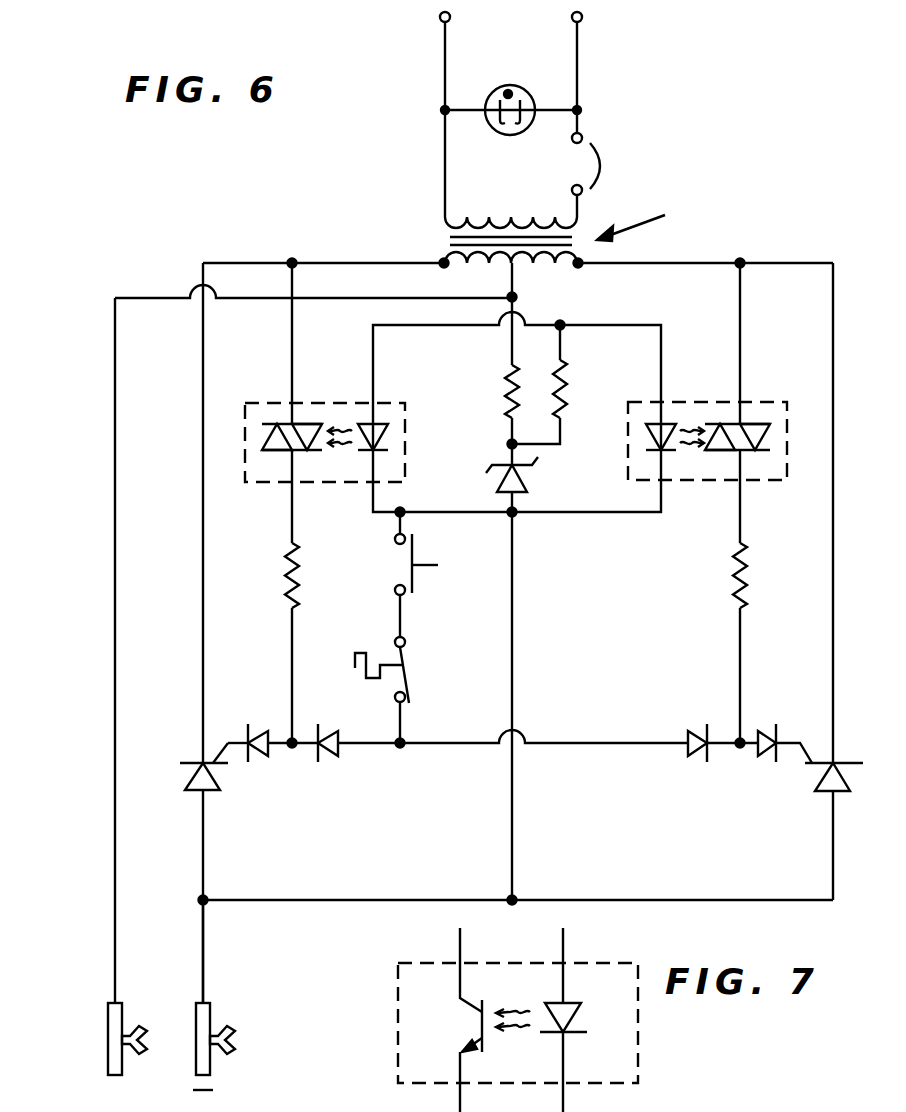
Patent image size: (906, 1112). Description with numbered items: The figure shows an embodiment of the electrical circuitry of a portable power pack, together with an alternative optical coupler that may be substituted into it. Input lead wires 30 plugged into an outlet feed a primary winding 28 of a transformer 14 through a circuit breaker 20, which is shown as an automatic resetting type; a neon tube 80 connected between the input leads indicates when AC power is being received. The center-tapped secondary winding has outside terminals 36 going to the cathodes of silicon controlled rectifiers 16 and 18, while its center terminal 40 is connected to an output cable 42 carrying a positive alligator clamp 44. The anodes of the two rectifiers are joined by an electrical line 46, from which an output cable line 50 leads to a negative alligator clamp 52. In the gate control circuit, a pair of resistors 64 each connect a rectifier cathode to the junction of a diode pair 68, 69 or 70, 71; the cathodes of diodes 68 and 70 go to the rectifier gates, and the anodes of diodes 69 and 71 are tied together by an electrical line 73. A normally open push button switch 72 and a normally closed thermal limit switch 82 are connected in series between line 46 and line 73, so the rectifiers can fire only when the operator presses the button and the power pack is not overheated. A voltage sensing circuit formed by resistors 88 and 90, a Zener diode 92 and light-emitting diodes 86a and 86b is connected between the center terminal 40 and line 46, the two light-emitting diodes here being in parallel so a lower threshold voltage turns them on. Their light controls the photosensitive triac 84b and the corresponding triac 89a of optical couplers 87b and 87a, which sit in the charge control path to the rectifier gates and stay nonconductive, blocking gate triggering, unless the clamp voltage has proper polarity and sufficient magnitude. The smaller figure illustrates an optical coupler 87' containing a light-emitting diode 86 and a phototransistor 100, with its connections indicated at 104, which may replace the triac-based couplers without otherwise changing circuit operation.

In FIG. 6, the transformer 14 is at (582, 223).
In FIG. 6, the silicon controlled rectifier 16 is at (197, 782).
In FIG. 6, the silicon controlled rectifier 18 is at (850, 783).
In FIG. 6, the circuit breaker 20 is at (601, 164).
In FIG. 6, the primary winding 28 is at (507, 217).
In FIG. 6, the input lead wires 30 is at (445, 62).
In FIG. 6, the outside terminals 36 is at (440, 260).
In FIG. 6, the center terminal 40 is at (540, 284).
In FIG. 6, the output cable 42 is at (112, 855).
In FIG. 6, the positive alligator clamp 44 is at (108, 1022).
In FIG. 6, the electrical line 46 is at (350, 900).
In FIG. 6, the output cable line 50 is at (205, 941).
In FIG. 6, the negative alligator clamp 52 is at (232, 1022).
In FIG. 6, the resistors 64 is at (288, 582).
In FIG. 6, the diode 68 is at (265, 756).
In FIG. 6, the diode 69 is at (330, 753).
In FIG. 6, the diode 70 is at (762, 752).
In FIG. 6, the diode 71 is at (692, 755).
In FIG. 6, the push button switch 72 is at (414, 572).
In FIG. 6, the electrical line 73 is at (467, 747).
In FIG. 6, the neon tube 80 is at (522, 88).
In FIG. 6, the thermal limit switch 82 is at (410, 677).
In FIG. 6, the photosensitive triac 84b is at (312, 424).
In FIG. 6, the light-emitting diode 86b is at (378, 422).
In FIG. 6, the optical coupler 87b is at (260, 483).
In FIG. 6, the resistor 88 is at (506, 396).
In FIG. 6, the resistor 90 is at (575, 398).
In FIG. 6, the Zener diode 92 is at (497, 487).
In FIG. 6, the triac 89a is at (756, 424).
In FIG. 6, the light-emitting diode 86a is at (658, 432).
In FIG. 6, the optical coupler 87a is at (700, 483).
In FIG. 7, the light-emitting diode 86 is at (582, 1018).
In FIG. 7, the optical coupler 87' is at (552, 1023).
In FIG. 7, the phototransistor 100 is at (460, 1025).
In FIG. 7, the conductor 104 is at (874, 1106).